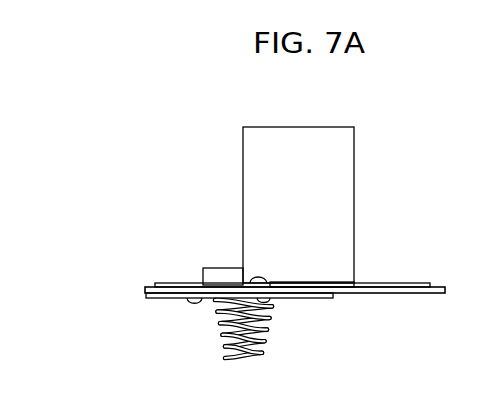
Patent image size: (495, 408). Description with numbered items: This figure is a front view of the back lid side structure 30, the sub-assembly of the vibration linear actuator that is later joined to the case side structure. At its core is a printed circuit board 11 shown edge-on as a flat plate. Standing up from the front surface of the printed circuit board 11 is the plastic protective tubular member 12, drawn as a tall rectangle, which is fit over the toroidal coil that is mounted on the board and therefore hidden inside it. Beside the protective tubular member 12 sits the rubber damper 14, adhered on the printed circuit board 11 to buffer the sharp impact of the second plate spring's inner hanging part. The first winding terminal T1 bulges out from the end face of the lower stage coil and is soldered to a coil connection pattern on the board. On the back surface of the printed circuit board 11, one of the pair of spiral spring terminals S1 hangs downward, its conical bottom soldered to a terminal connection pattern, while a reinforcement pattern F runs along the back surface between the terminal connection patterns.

The back lid side structure 30 is at (180, 113).
The printed circuit board 11 is at (152, 286).
The protective tubular member 12 is at (350, 187).
The rubber damper 14 is at (218, 271).
The reinforcement pattern F is at (175, 298).
The first winding terminal T1 is at (270, 285).
The spiral spring terminal S1 is at (270, 333).